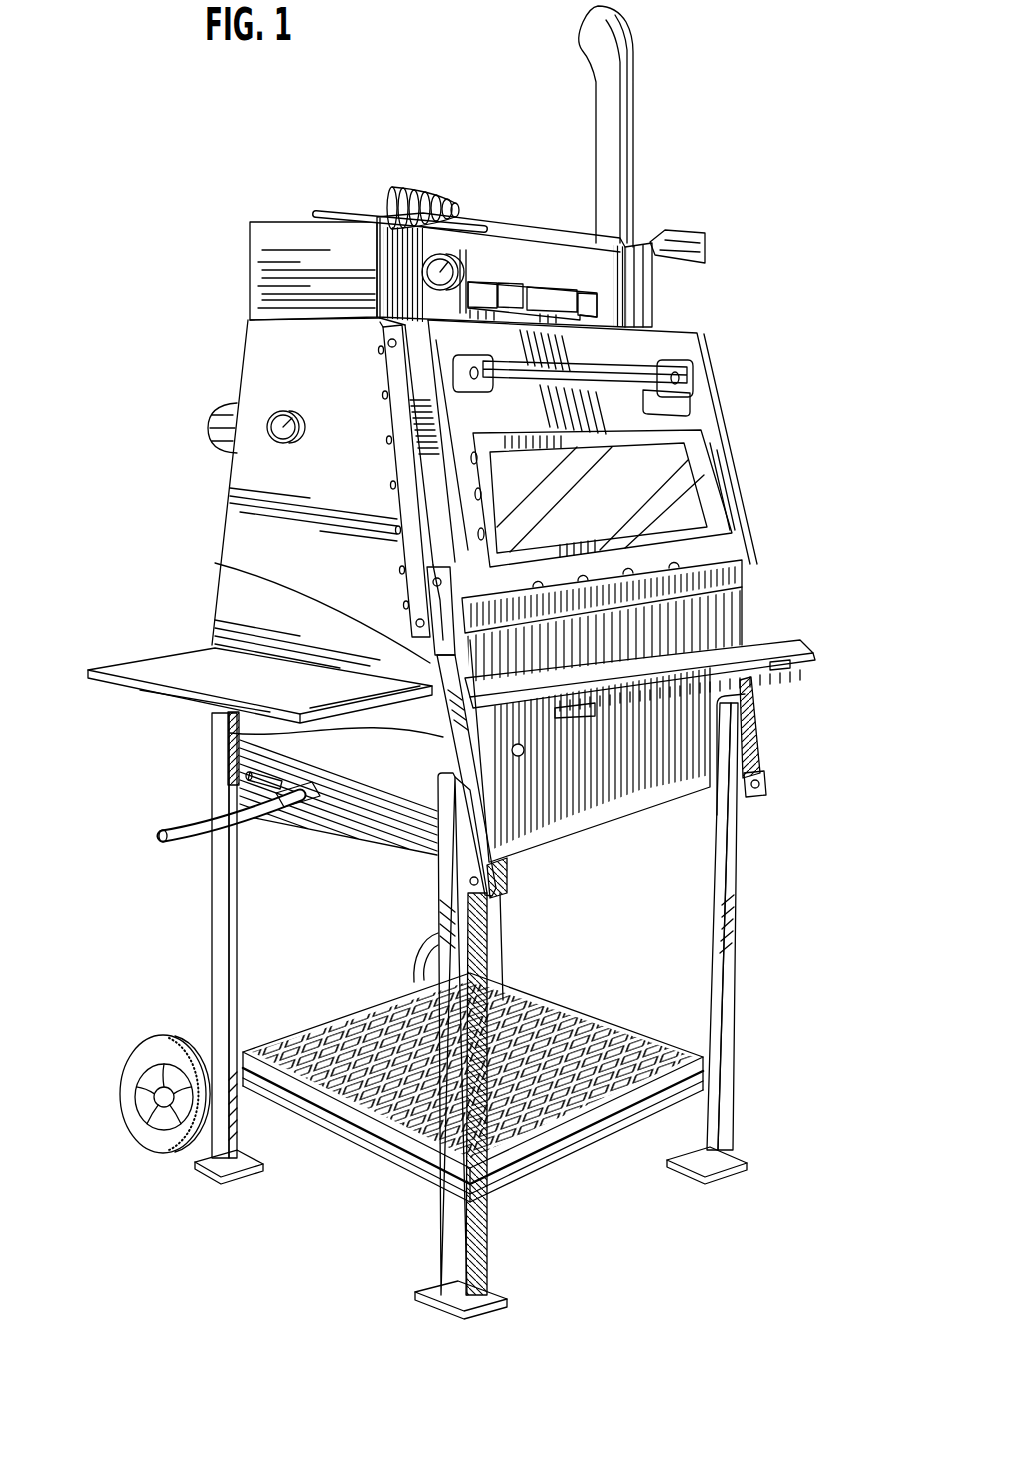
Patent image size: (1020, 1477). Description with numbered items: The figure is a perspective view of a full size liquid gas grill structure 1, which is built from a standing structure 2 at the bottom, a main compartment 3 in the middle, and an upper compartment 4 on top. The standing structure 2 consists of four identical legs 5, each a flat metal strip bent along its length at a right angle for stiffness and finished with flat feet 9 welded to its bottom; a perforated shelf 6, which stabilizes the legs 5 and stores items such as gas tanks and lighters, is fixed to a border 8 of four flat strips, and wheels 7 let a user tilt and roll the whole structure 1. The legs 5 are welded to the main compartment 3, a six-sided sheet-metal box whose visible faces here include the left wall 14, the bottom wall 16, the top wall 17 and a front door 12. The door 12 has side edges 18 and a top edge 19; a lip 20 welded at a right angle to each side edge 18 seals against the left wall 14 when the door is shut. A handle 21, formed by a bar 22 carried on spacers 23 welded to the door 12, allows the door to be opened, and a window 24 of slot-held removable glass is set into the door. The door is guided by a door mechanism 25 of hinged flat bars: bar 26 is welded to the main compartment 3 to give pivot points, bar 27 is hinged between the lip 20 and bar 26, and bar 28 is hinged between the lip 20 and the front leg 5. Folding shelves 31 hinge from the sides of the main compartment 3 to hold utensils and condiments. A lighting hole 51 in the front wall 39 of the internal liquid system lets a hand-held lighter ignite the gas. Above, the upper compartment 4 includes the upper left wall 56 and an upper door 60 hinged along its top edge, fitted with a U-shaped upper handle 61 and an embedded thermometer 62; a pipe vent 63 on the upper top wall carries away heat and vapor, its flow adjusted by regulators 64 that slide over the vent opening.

The liquid gas grill structure 1 is at (785, 170).
The standing structure 2 is at (252, 165).
The main compartment 3 is at (196, 507).
The upper compartment 4 is at (234, 267).
The legs 5 is at (507, 928).
The shelf 6 is at (363, 1038).
The wheels 7 is at (425, 966).
The border 8 is at (303, 1130).
The feet 9 is at (233, 1182).
The door 12 is at (620, 350).
The left wall 14 is at (287, 472).
The bottom wall 16 is at (688, 793).
The top wall 17 is at (283, 317).
The side edges 18 is at (730, 497).
The top edge 19 is at (552, 292).
The lip 20 is at (400, 410).
The handle 21 is at (637, 362).
The bar 22 is at (670, 398).
The spacers 23 is at (385, 320).
The window 24 is at (665, 473).
The door mechanism 25 is at (392, 545).
The bar 26 is at (673, 583).
The bar 27 is at (390, 410).
The bar 28 is at (227, 737).
The folding shelves 31 is at (197, 670).
The front wall 39 is at (690, 743).
The lighting hole 51 is at (525, 755).
The upper left wall 56 is at (273, 247).
The upper door 60 is at (645, 300).
The upper handle 61 is at (537, 296).
The thermometer 62 is at (448, 253).
The vent 63 is at (621, 90).
The regulators 64 is at (428, 188).